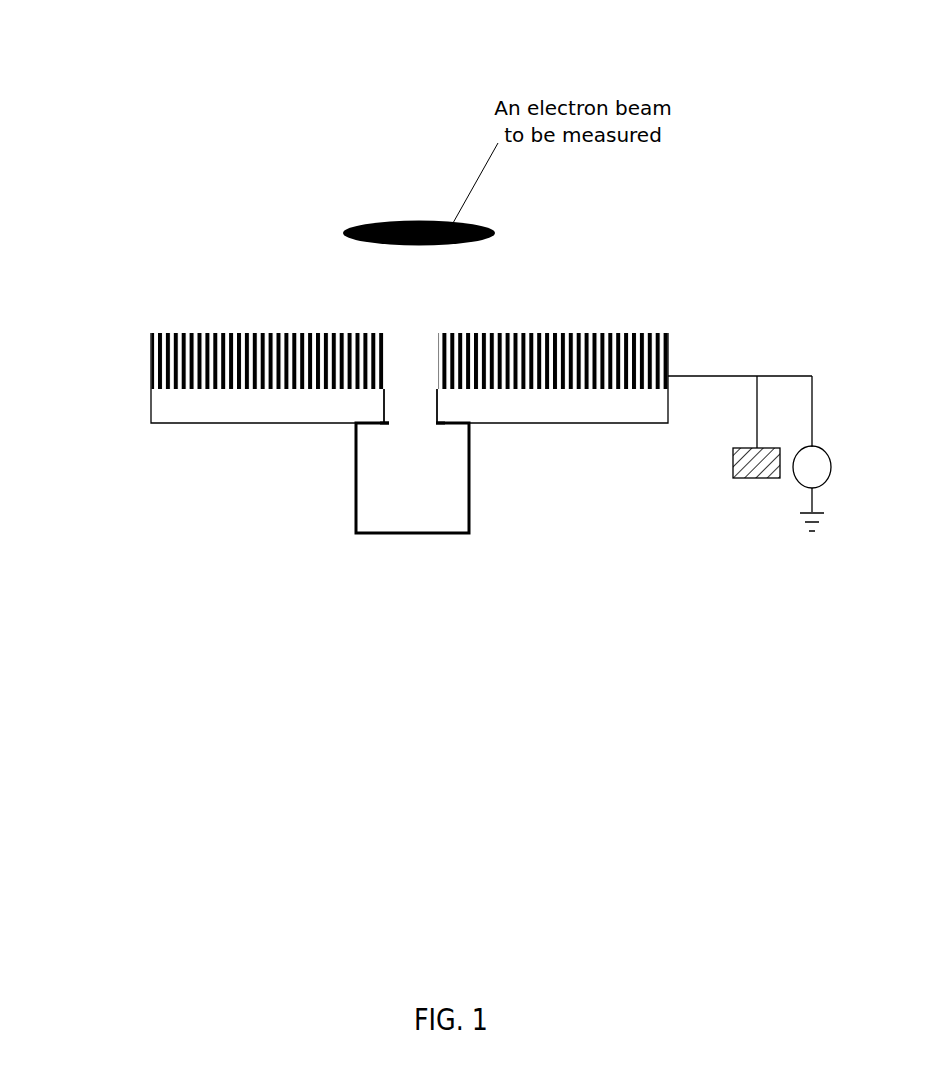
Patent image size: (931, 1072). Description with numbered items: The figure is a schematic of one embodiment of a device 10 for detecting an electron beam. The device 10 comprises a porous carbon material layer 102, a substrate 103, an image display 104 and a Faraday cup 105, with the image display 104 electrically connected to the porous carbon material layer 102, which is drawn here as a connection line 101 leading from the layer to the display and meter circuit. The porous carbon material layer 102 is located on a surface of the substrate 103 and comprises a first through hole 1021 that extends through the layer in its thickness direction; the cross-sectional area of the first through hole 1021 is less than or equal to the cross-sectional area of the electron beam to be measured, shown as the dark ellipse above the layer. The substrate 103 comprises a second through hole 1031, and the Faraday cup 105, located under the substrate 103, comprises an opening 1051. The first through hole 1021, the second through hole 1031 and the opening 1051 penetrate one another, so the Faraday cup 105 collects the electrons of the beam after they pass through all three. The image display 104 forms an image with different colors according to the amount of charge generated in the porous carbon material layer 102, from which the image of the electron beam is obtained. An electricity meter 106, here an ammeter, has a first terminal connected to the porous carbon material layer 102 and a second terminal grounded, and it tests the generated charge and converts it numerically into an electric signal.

The device for detecting electron beam 10 is at (429, 123).
The conductive wire 101 is at (698, 363).
The porous carbon material layer 102 is at (632, 332).
The first through hole 1021 is at (409, 356).
The substrate 103 is at (196, 403).
The second through hole 1031 is at (421, 412).
The image display 104 is at (757, 478).
The Faraday cup 105 is at (470, 495).
The opening 1051 is at (402, 424).
The electricity meter 106 is at (822, 446).